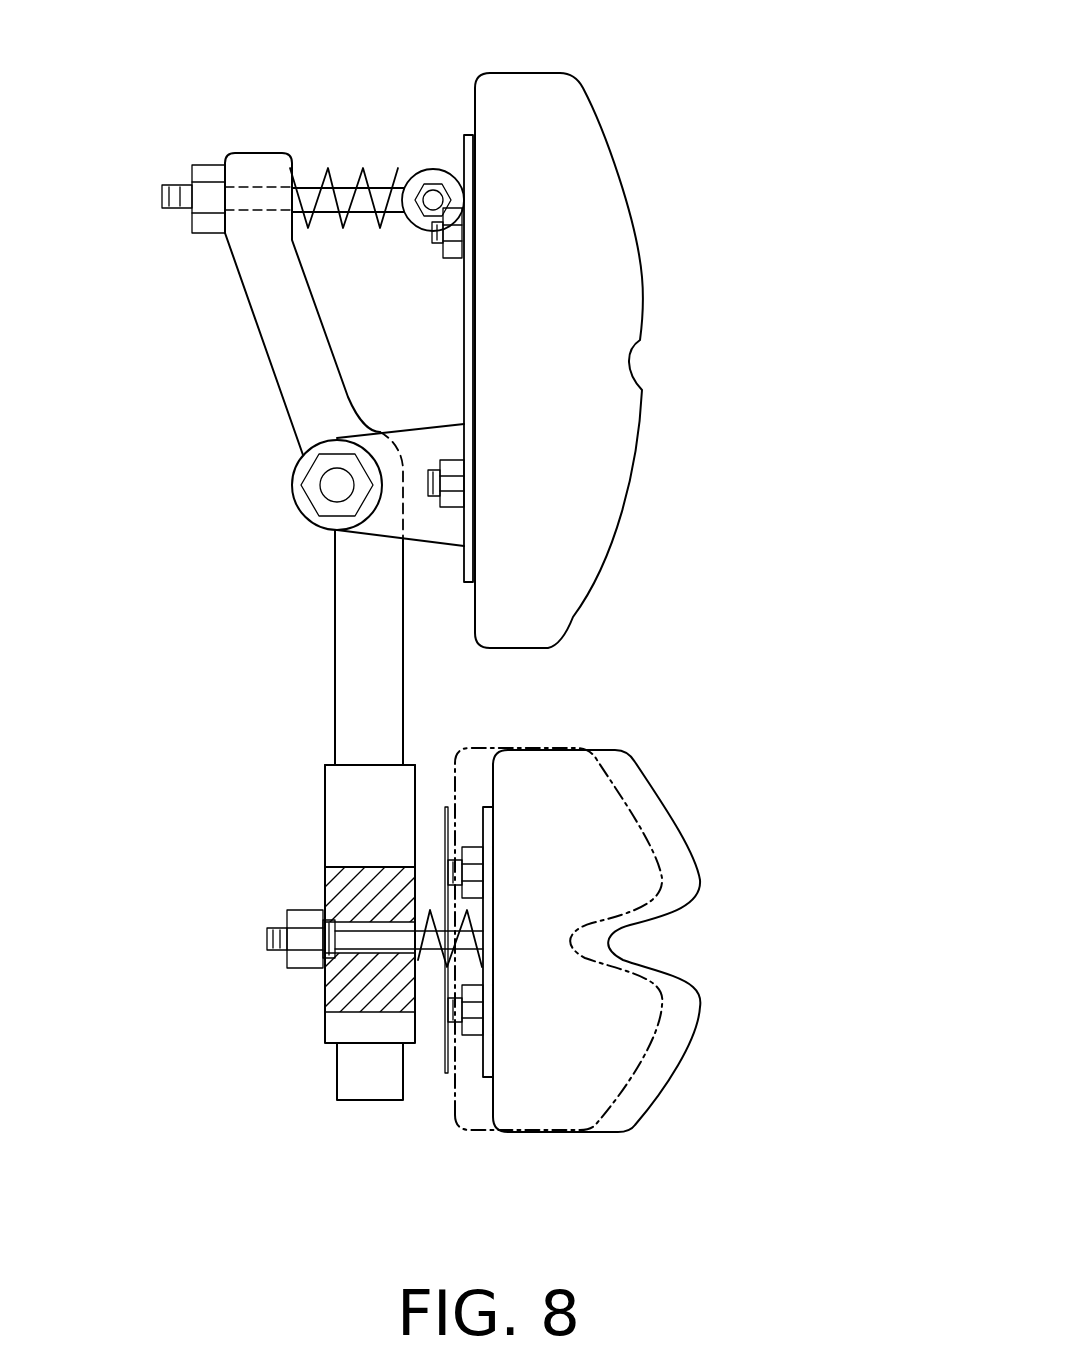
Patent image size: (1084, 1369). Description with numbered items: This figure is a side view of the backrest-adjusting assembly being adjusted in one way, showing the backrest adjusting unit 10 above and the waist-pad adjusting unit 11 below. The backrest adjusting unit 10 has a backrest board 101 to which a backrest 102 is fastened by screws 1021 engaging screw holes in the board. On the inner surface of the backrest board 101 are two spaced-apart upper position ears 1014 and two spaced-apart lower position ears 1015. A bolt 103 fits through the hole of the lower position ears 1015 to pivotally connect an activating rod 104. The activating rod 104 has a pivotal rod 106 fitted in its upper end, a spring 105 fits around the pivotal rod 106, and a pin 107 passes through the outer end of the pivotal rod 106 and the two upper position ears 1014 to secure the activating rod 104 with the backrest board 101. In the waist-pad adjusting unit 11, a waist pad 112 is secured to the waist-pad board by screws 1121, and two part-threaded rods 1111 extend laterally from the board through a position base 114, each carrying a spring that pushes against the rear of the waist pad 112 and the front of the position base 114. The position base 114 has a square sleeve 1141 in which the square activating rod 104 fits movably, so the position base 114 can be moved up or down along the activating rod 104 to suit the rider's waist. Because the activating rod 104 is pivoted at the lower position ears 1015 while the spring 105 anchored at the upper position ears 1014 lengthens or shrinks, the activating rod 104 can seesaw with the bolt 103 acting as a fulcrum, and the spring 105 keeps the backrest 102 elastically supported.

The backrest adjusting unit 10 is at (222, 355).
The waist-pad adjusting unit 11 is at (337, 1147).
The backrest board 101 is at (462, 360).
The backrest 102 is at (603, 455).
The bolt 103 is at (333, 488).
The activating rod 104 is at (357, 627).
The spring 105 is at (332, 185).
The pivotal rod 106 is at (172, 185).
The pin 107 is at (437, 195).
The upper position ears 1014 is at (417, 180).
The lower position ears 1015 is at (433, 527).
The screws 1021 is at (447, 230).
The waist pad 112 is at (665, 833).
The position base 114 is at (317, 1060).
The square sleeve 1141 is at (350, 810).
The part-threaded rods 1111 is at (358, 937).
The screws 1121 is at (473, 1008).